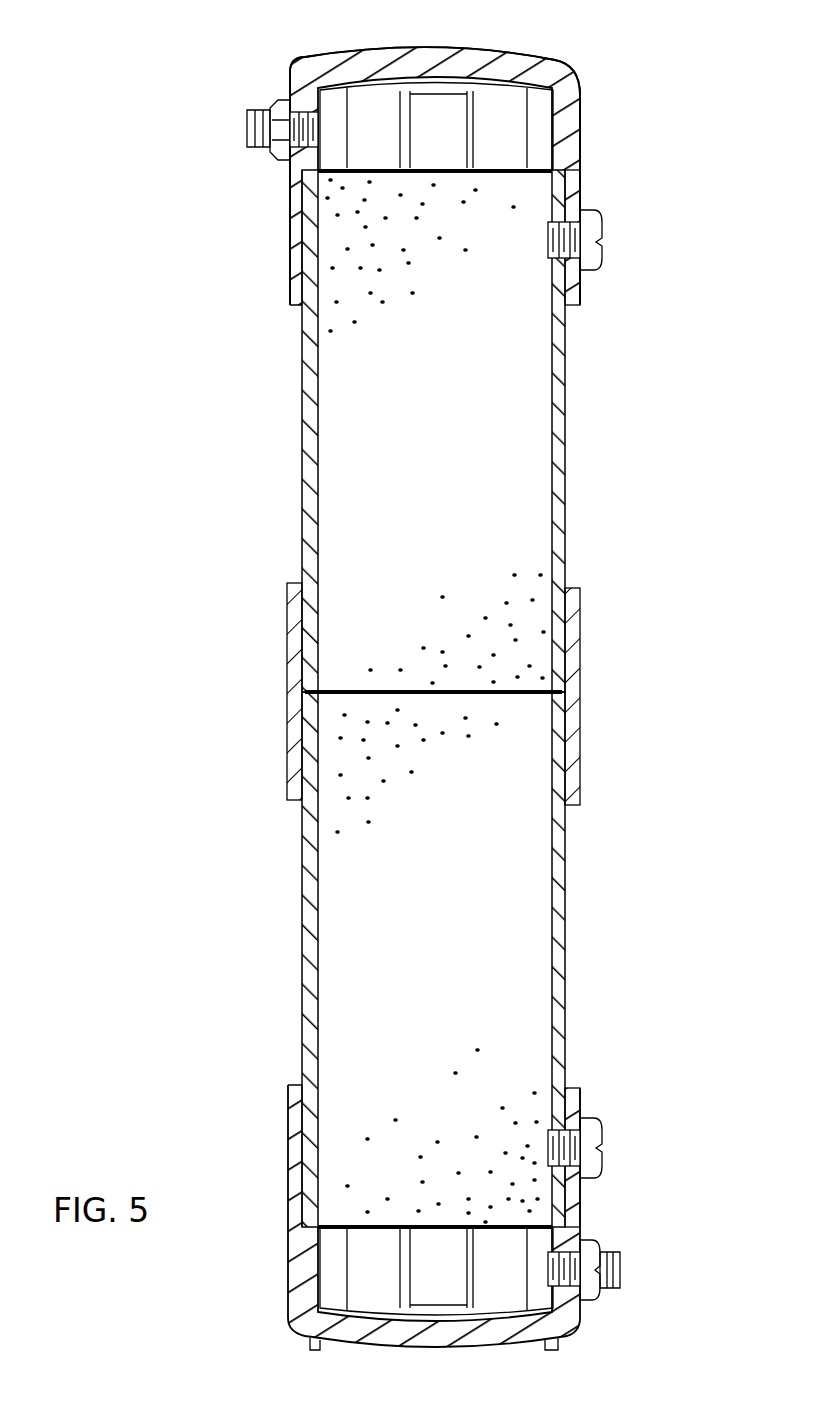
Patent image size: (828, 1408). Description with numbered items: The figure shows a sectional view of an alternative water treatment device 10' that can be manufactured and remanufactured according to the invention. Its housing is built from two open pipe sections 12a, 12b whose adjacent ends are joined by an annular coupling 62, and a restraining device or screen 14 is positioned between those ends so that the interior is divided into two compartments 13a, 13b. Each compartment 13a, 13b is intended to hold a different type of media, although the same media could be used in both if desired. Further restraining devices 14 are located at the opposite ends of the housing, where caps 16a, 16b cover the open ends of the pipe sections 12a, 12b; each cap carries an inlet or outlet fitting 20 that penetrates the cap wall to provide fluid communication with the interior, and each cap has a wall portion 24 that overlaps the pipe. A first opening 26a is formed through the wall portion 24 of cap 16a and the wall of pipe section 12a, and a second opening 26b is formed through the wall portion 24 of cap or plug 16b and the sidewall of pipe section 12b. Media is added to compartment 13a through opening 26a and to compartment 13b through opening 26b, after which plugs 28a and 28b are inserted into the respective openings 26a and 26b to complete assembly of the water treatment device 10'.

The water treatment device 10' is at (488, 158).
The pipe section 12a is at (567, 423).
The pipe section 12b is at (565, 858).
The compartment 13a is at (436, 478).
The compartment 13b is at (460, 952).
The restraining device or screen 14 is at (523, 172).
The cap 16a is at (432, 56).
The cap 16b is at (576, 1318).
The inlet or outlet fitting 20 is at (247, 124).
The wall portion 24 is at (582, 306).
The first opening 26a is at (583, 270).
The second opening 26b is at (583, 1172).
The plug 28a is at (603, 230).
The plug 28b is at (601, 1135).
The annular coupling 62 is at (580, 688).